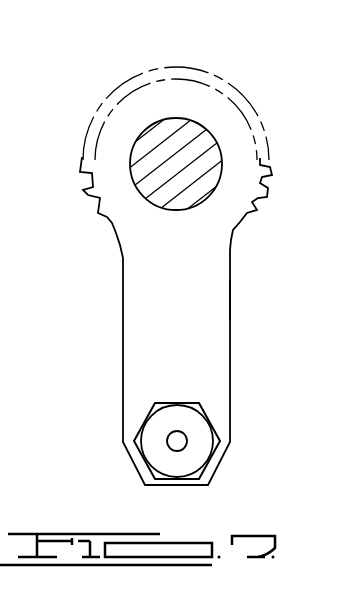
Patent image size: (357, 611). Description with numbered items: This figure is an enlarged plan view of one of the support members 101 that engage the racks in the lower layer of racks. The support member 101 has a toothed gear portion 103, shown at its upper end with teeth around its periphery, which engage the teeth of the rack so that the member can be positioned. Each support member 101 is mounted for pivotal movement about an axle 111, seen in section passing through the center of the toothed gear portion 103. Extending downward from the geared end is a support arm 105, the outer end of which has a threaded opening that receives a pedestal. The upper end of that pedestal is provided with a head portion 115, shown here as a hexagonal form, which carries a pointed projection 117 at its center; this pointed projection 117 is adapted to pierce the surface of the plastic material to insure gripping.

The support member 101 is at (203, 253).
The toothed gear portion 103 is at (87, 190).
The support arm 105 is at (203, 297).
The axle 111 is at (185, 148).
The head portion 115 is at (207, 418).
The pointed projection 117 is at (175, 437).